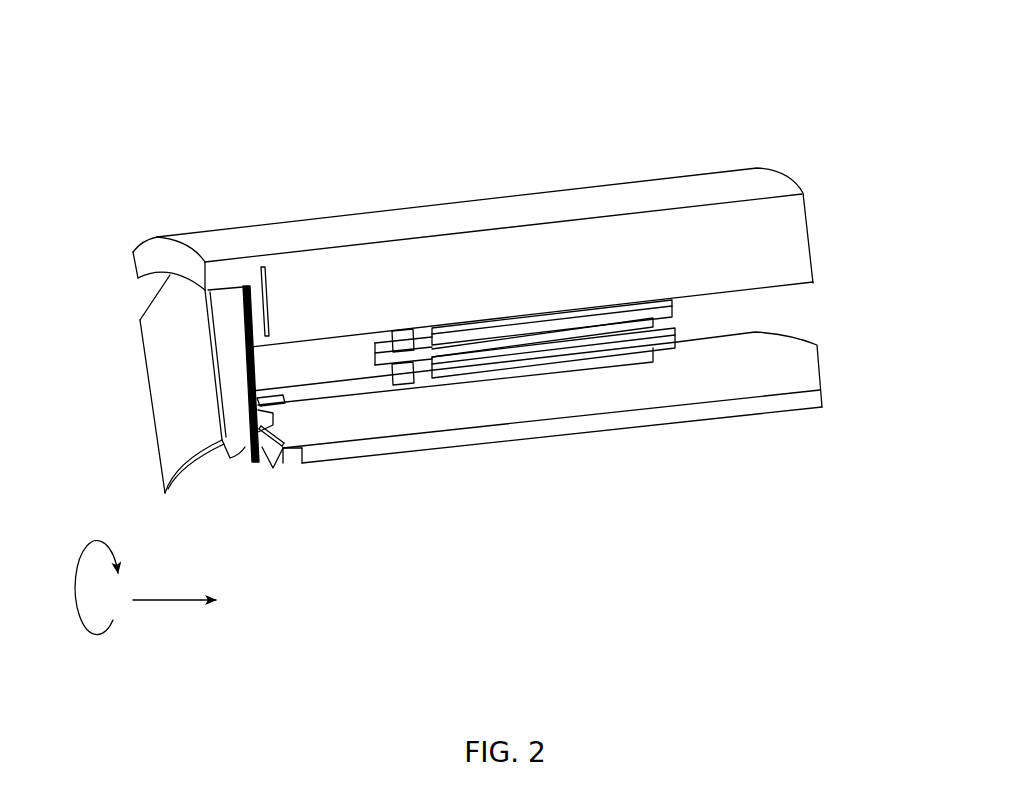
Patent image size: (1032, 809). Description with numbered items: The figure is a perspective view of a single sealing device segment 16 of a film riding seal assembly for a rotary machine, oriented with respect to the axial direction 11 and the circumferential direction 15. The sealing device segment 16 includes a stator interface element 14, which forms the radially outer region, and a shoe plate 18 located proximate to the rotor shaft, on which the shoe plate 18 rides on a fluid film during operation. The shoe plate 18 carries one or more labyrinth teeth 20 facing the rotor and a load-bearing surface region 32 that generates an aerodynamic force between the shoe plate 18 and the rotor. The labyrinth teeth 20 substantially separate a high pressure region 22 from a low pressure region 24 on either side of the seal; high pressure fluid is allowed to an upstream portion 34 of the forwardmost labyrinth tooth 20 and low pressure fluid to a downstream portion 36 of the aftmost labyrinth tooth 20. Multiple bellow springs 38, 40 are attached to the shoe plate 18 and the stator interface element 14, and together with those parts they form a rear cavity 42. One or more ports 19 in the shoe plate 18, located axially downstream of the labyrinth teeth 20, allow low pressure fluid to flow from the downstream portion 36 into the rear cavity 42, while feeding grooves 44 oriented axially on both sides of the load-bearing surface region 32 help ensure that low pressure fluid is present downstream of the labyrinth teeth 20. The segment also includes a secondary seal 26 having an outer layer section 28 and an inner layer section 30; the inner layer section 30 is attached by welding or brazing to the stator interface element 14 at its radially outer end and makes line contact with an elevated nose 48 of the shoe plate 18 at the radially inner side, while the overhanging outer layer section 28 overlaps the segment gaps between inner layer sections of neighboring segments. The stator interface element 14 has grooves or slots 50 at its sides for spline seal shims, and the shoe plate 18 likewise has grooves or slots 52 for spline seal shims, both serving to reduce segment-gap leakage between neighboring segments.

The sealing device segment 16 is at (724, 56).
The stator interface element 14 is at (788, 223).
The shoe plate 18 is at (807, 374).
The high pressure region 22 is at (122, 341).
The low pressure region 24 is at (799, 301).
The secondary seal 26 is at (181, 484).
The outer layer section 28 is at (175, 417).
The inner layer section 30 is at (248, 384).
The ports 19 is at (270, 397).
The rear cavity 42 is at (342, 364).
The bellow spring 40 is at (541, 356).
The bellow spring 38 is at (401, 340).
The feeding grooves 44 is at (698, 412).
The load-bearing surface region 32 is at (738, 405).
The grooves or slots 52 is at (306, 449).
The elevated nose 48 is at (274, 466).
The downstream portion 36 is at (293, 460).
The upstream portion 34 is at (262, 462).
The labyrinth teeth 20 is at (285, 464).
The grooves or slots 50 is at (272, 300).
The axial direction 11 is at (193, 603).
The circumferential direction 15 is at (138, 648).